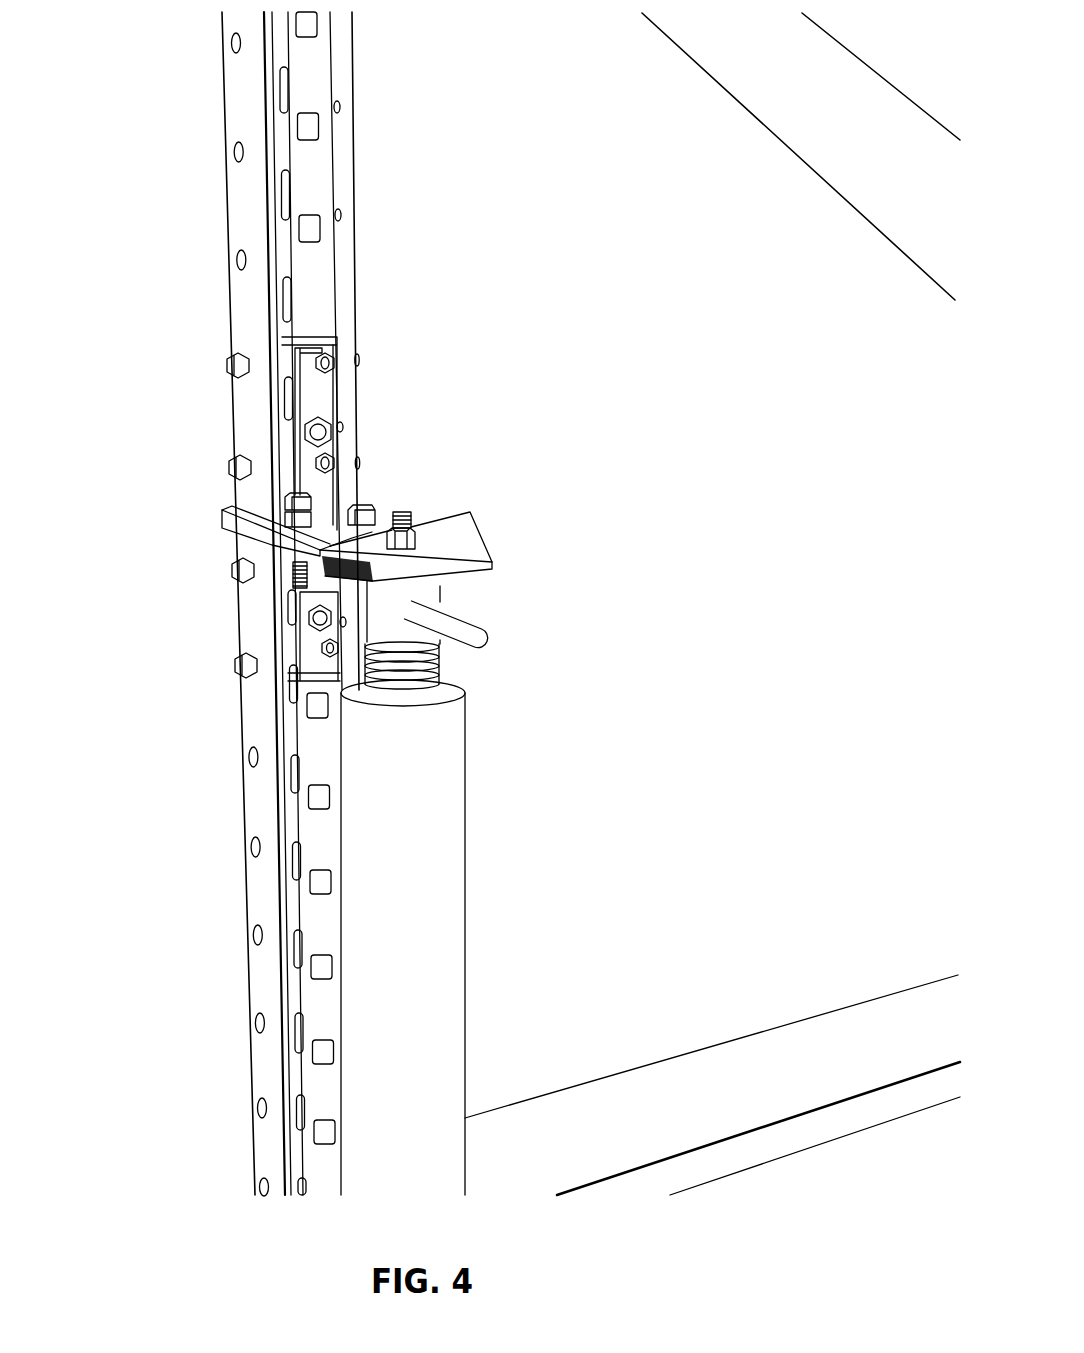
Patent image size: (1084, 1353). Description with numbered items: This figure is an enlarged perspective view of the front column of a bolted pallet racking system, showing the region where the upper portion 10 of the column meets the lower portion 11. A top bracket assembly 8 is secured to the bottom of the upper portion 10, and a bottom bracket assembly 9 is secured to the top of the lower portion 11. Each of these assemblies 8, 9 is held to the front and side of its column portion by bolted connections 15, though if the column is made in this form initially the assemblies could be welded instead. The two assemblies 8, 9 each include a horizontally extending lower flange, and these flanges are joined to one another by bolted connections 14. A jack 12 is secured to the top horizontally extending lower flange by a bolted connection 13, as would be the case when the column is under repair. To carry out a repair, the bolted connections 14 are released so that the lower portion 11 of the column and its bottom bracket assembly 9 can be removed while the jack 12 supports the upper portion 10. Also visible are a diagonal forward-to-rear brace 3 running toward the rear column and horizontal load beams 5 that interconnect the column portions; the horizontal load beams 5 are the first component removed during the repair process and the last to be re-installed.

The diagonal forward-to-rear brace 3 is at (781, 172).
The horizontal load beam 5 is at (739, 1045).
The top bracket assembly 8 is at (374, 525).
The bottom bracket assembly 9 is at (266, 574).
The upper portion of front column 10 is at (228, 222).
The lower portion of front column 11 is at (230, 1071).
The jack 12 is at (491, 772).
The bolted connection 13 is at (439, 528).
The bolted connection 14 is at (321, 506).
The bolted connection 15 is at (285, 435).